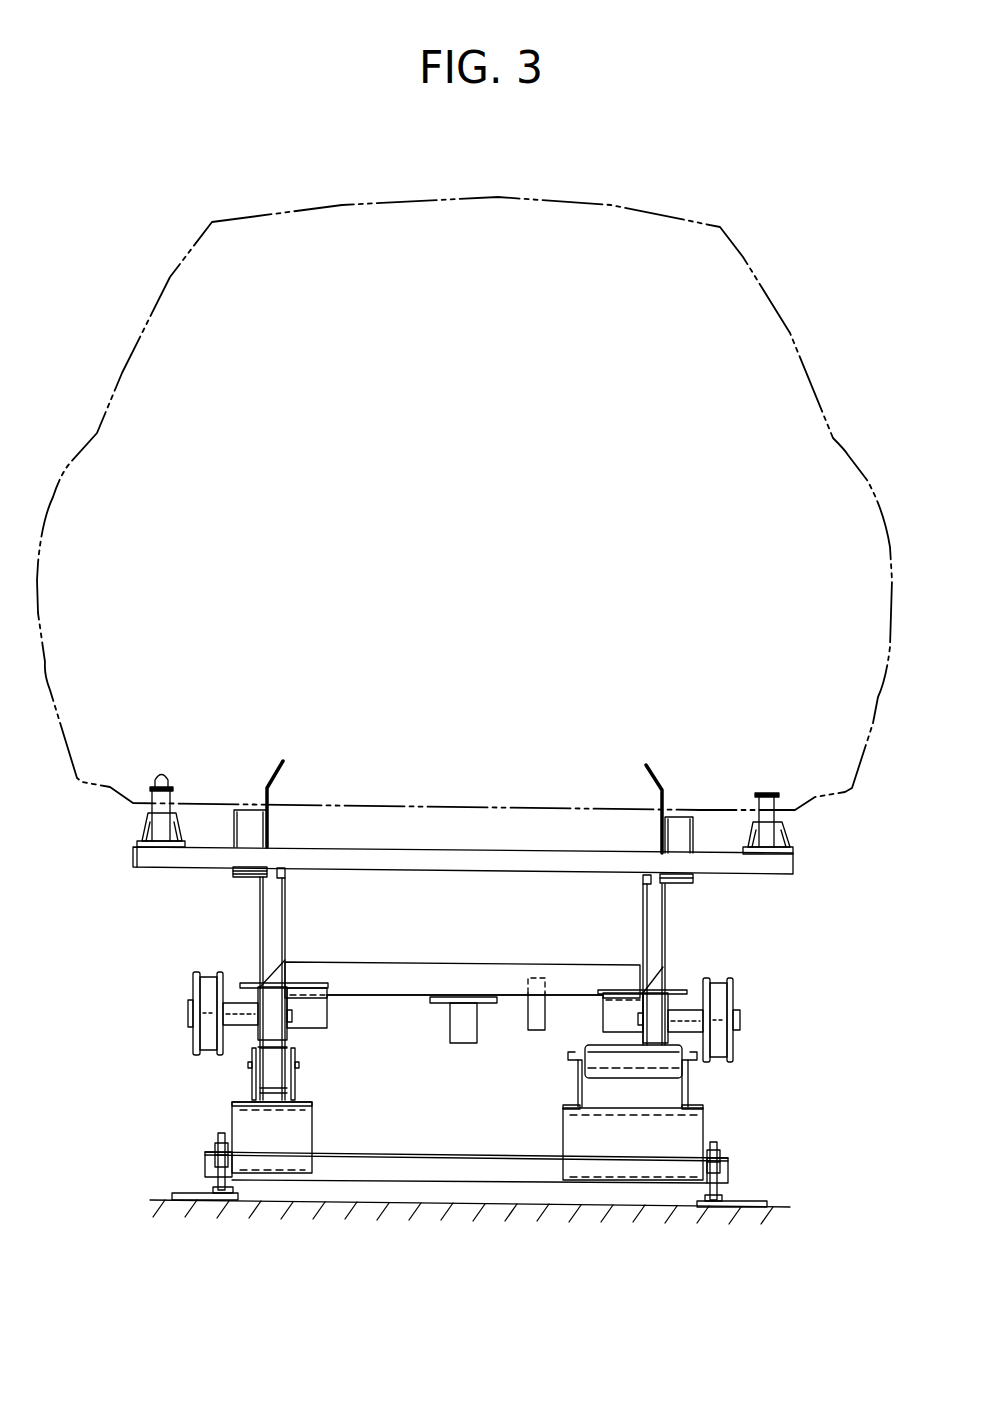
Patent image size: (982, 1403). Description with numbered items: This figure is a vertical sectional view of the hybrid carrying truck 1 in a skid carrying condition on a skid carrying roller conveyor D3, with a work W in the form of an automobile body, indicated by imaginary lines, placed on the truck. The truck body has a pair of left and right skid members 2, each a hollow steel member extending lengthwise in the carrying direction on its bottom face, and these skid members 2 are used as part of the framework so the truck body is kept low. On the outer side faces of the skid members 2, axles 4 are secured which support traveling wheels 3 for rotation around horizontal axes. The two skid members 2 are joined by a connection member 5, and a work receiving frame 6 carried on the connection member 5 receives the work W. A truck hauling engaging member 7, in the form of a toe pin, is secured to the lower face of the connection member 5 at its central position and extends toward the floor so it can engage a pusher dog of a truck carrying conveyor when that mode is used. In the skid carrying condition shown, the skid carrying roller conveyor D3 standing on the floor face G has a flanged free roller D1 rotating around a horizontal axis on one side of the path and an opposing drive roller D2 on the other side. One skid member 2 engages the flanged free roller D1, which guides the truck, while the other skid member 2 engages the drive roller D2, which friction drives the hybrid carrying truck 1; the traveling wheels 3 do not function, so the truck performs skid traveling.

The work W is at (498, 197).
The hybrid carrying truck 1 is at (730, 907).
The skid members 2 is at (277, 1020).
The traveling wheels 3 is at (209, 995).
The axles 4 is at (237, 1010).
The connection members 5 is at (415, 980).
The work receiving frame 6 is at (780, 866).
The truck hauling engaging member 7 is at (470, 1023).
The flanged free rollers D1 is at (250, 1058).
The drive roller D2 is at (608, 1062).
The skid carrying roller conveyor D3 is at (735, 1102).
The floor face G is at (773, 1207).